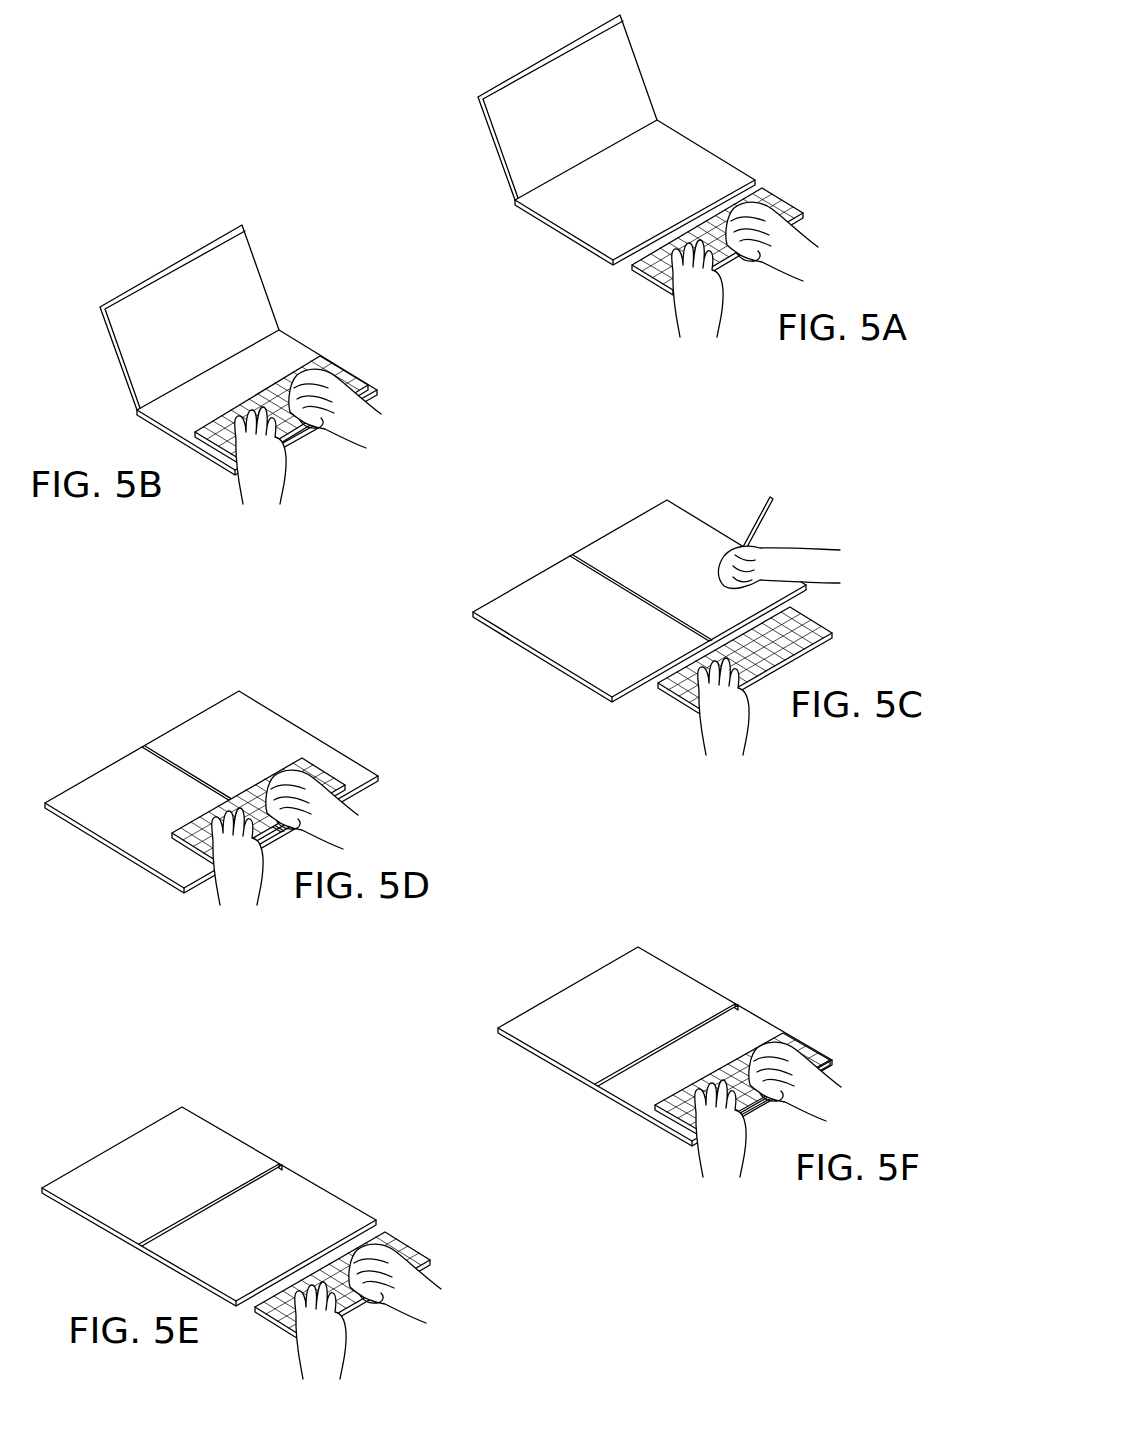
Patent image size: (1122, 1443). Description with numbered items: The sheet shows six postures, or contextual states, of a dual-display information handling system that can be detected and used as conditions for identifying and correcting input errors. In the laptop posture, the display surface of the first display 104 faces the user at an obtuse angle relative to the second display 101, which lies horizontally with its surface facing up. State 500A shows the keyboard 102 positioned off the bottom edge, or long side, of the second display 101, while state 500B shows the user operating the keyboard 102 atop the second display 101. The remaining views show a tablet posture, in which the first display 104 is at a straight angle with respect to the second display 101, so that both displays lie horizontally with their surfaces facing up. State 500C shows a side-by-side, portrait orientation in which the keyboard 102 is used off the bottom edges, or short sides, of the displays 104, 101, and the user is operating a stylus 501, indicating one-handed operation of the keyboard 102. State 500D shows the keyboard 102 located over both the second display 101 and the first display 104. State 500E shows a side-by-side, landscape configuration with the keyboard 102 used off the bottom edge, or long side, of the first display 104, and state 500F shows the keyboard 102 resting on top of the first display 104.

In FIG. 5A, the second display 101 is at (673, 140).
In FIG. 5B, the second display 101 is at (295, 352).
In FIG. 5C, the second display 101 is at (495, 608).
In FIG. 5D, the second display 101 is at (73, 797).
In FIG. 5E, the second display 101 is at (113, 1157).
In FIG. 5F, the second display 101 is at (568, 997).
In FIG. 5A, the keyboard 102 is at (788, 200).
In FIG. 5B, the keyboard 102 is at (348, 377).
In FIG. 5C, the keyboard 102 is at (677, 703).
In FIG. 5D, the keyboard 102 is at (328, 778).
In FIG. 5E, the keyboard 102 is at (412, 1252).
In FIG. 5F, the keyboard 102 is at (808, 1052).
In FIG. 5A, the first display 104 is at (505, 93).
In FIG. 5B, the first display 104 is at (127, 305).
In FIG. 5C, the first display 104 is at (593, 550).
In FIG. 5D, the first display 104 is at (187, 730).
In FIG. 5E, the first display 104 is at (340, 1212).
In FIG. 5F, the first display 104 is at (757, 1028).
In FIG. 5C, the stylus 501 is at (762, 515).
In FIG. 5A, the state 500A is at (647, 176).
In FIG. 5B, the state 500B is at (250, 364).
In FIG. 5C, the state 500C is at (693, 623).
In FIG. 5D, the state 500D is at (211, 786).
In FIG. 5E, the state 500E is at (243, 1231).
In FIG. 5F, the state 500F is at (670, 1043).